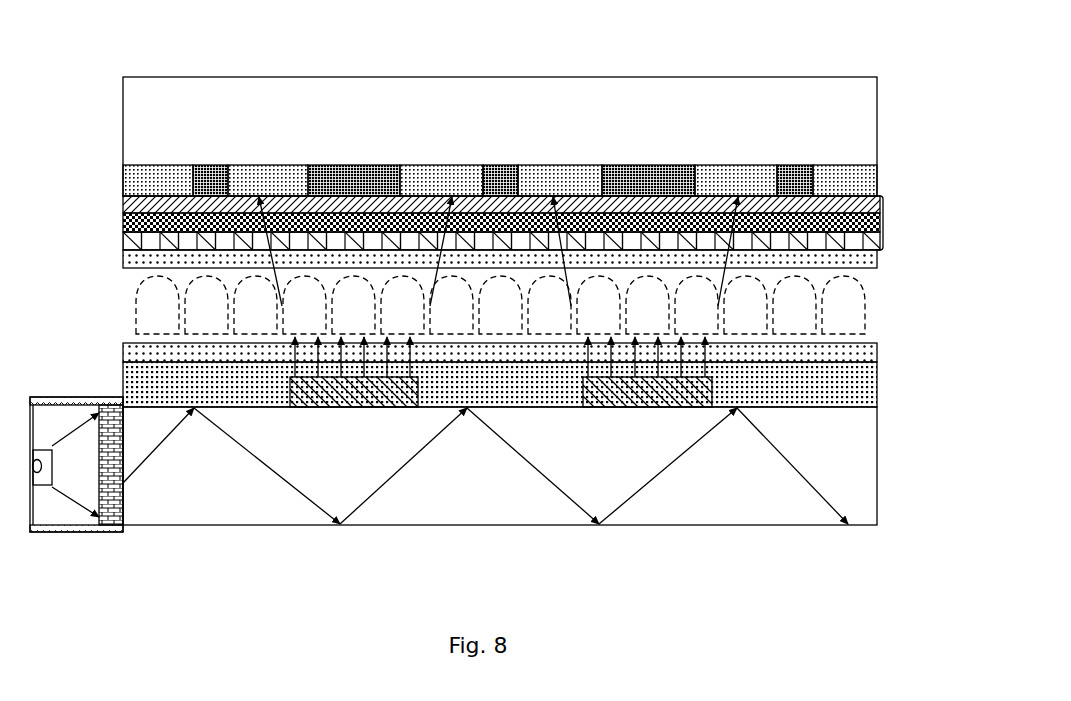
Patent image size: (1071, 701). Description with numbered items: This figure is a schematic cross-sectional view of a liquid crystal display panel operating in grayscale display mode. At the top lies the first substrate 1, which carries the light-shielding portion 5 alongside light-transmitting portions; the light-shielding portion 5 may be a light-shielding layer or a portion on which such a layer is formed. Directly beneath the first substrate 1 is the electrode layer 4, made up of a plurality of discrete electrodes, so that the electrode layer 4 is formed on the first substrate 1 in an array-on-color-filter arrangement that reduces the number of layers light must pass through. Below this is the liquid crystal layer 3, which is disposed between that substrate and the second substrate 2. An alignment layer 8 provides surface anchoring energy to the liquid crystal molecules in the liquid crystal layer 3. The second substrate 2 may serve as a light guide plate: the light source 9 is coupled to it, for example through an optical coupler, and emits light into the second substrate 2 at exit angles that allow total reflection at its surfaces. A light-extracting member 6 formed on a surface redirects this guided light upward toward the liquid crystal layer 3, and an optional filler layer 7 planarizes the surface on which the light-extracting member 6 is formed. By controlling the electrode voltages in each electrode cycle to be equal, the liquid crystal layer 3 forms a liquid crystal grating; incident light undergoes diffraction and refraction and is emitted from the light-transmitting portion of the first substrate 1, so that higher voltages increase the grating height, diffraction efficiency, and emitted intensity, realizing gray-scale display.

The first substrate 1 is at (877, 134).
The second substrate 2 is at (877, 443).
The liquid crystal layer 3 is at (875, 302).
The electrode layer 4 is at (882, 222).
The light-shielding portion 5 is at (647, 165).
The light-extracting member 6 is at (648, 407).
The filler layer 7 is at (877, 390).
The alignment layer 8 is at (880, 262).
The light source 9 is at (108, 405).